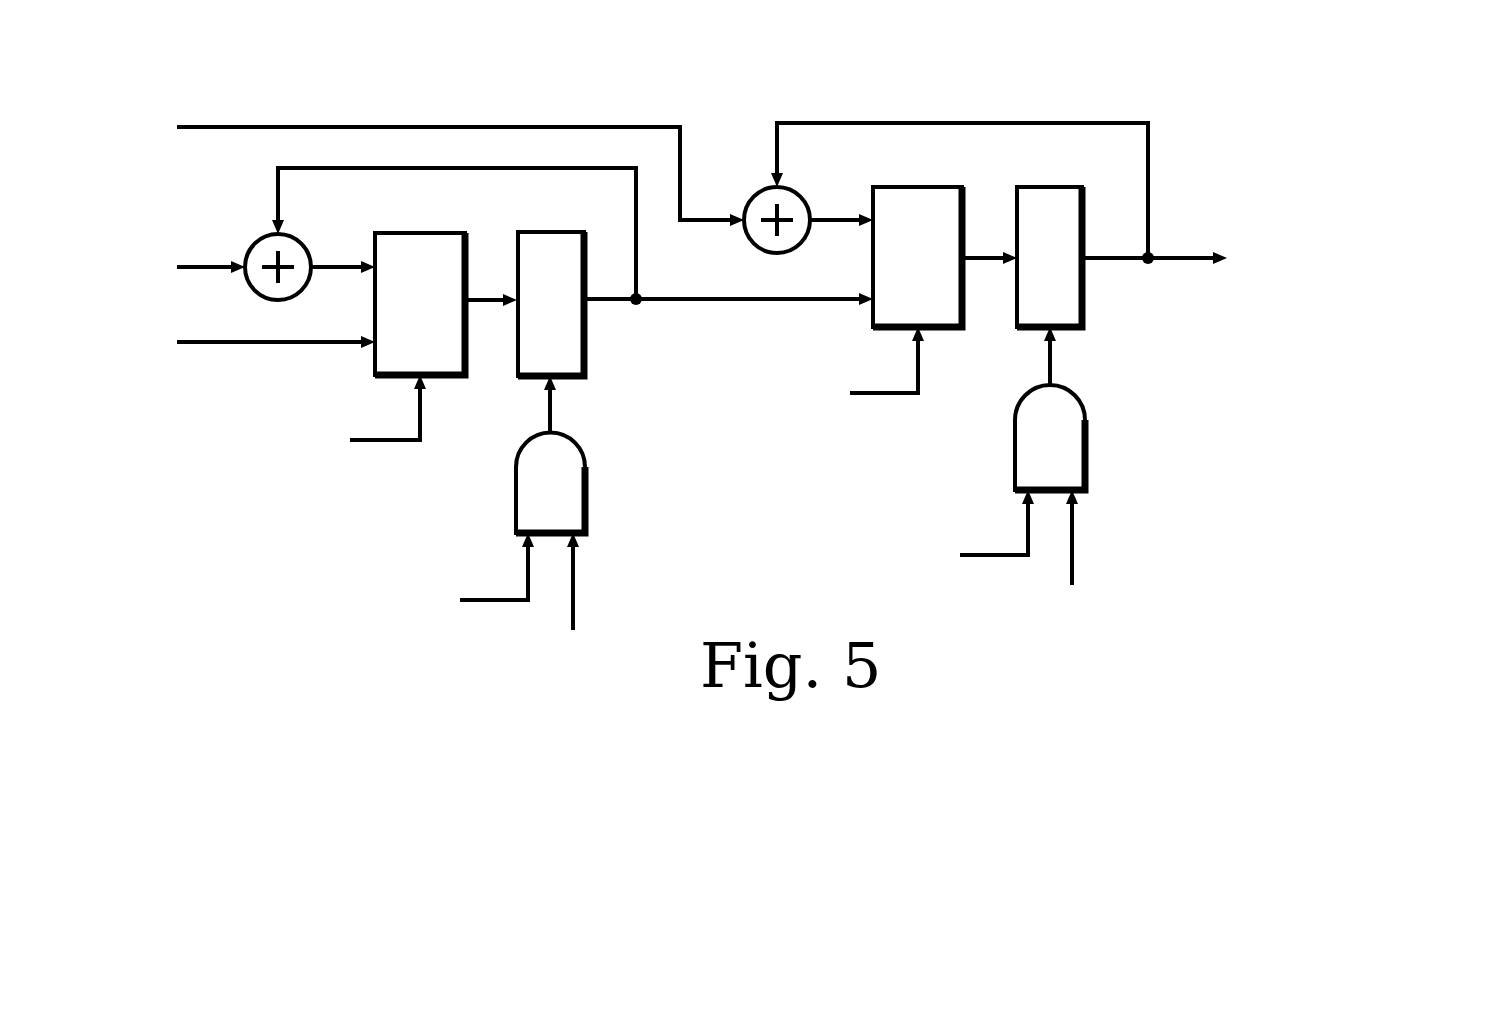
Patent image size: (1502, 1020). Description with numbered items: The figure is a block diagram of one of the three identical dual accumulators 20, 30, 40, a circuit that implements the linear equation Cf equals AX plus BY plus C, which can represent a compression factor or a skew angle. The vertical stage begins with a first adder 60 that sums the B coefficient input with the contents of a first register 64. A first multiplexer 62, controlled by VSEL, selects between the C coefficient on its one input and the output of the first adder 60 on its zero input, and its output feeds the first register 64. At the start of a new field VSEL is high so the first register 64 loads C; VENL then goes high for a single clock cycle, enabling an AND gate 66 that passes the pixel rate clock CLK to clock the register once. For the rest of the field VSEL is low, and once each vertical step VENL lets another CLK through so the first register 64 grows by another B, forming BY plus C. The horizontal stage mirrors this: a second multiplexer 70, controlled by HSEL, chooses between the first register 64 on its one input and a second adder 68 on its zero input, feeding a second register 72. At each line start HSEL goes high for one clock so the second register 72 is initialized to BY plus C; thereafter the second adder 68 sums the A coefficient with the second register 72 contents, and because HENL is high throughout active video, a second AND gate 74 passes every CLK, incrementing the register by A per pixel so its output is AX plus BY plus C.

The dual accumulator 20 is at (815, 357).
The dual accumulator 30 is at (815, 357).
The dual accumulator 40 is at (1108, 82).
The first adder 60 is at (259, 236).
The first multiplexer 62 is at (426, 233).
The first register 64 is at (561, 232).
The AND gate 66 is at (585, 506).
The second adder 68 is at (752, 200).
The second multiplexer 70 is at (938, 187).
The second register 72 is at (1055, 187).
The AND gate 74 is at (1085, 461).